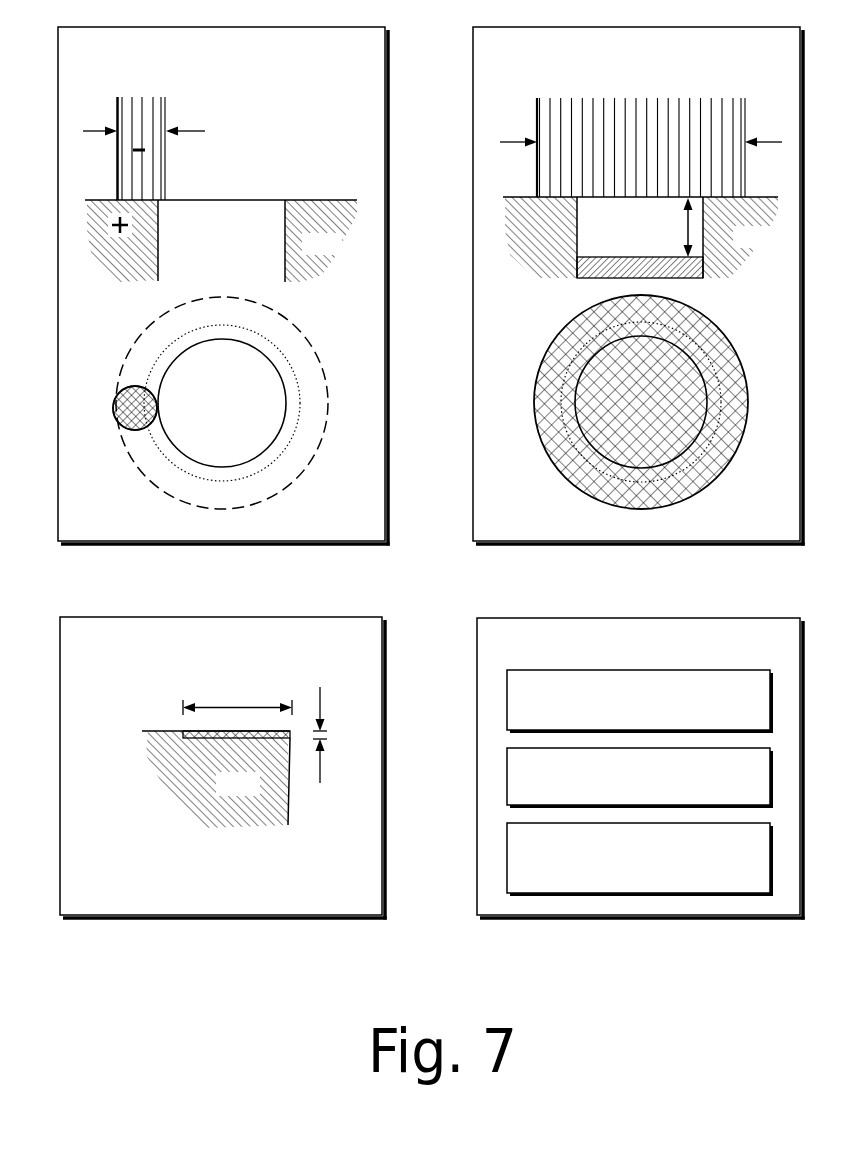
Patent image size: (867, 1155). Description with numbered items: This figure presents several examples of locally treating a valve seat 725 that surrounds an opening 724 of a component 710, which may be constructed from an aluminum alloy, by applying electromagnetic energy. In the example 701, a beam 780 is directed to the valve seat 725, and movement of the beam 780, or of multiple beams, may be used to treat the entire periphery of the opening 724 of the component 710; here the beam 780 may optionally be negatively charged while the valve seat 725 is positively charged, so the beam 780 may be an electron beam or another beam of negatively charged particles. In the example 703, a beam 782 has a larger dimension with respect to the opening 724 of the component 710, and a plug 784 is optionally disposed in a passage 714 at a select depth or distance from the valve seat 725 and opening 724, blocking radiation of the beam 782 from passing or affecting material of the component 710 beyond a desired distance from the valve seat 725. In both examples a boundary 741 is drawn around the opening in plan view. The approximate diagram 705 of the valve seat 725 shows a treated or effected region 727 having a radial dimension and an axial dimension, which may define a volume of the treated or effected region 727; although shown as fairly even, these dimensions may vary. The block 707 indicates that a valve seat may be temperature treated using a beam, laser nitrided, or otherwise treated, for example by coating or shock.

The example 701 is at (316, 65).
The example 703 is at (730, 65).
The approximate diagram 705 is at (316, 658).
The block 707 is at (626, 658).
The component 710 is at (305, 253).
The passage 714 is at (203, 266).
The opening 724 is at (158, 203).
The valve seat 725 is at (302, 199).
The treated or effected region 727 is at (183, 731).
The treatment boundary 741 is at (167, 462).
The beam 780 is at (125, 90).
The beam 782 is at (626, 90).
The plug 784 is at (668, 256).